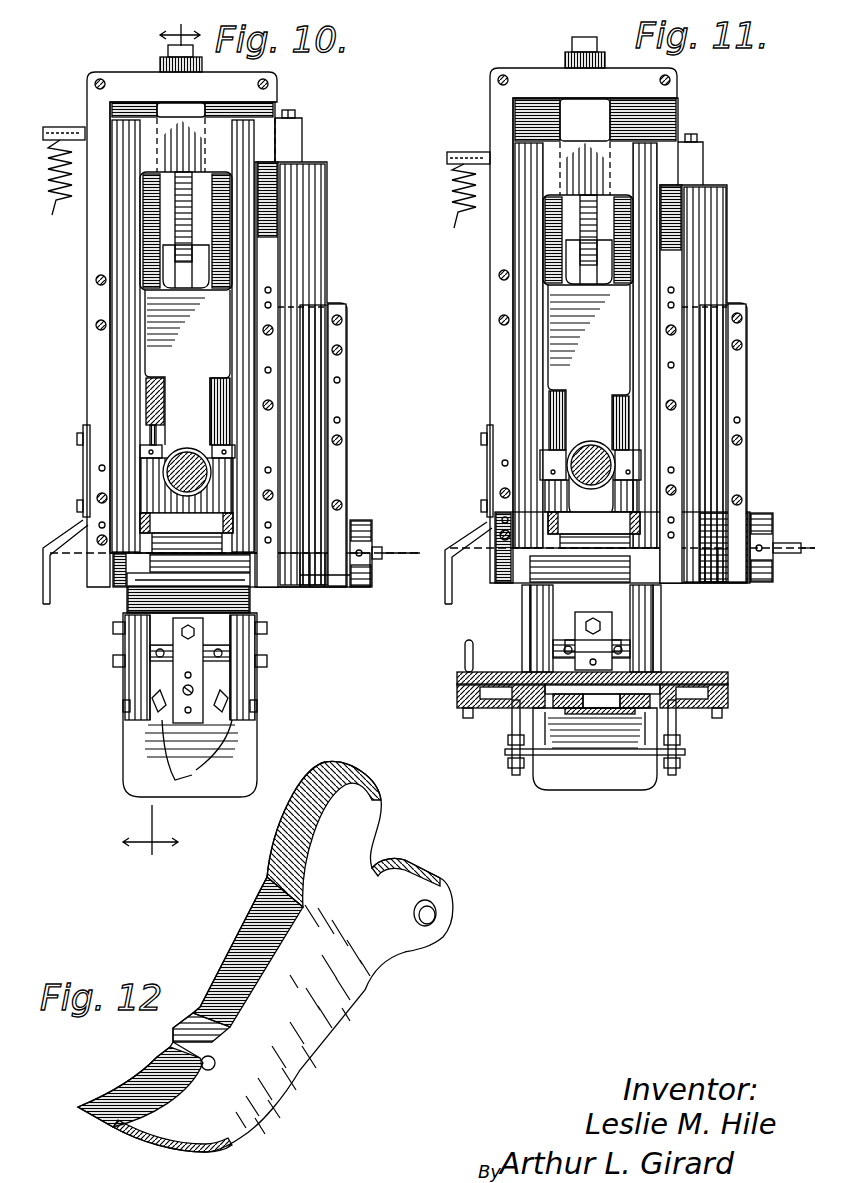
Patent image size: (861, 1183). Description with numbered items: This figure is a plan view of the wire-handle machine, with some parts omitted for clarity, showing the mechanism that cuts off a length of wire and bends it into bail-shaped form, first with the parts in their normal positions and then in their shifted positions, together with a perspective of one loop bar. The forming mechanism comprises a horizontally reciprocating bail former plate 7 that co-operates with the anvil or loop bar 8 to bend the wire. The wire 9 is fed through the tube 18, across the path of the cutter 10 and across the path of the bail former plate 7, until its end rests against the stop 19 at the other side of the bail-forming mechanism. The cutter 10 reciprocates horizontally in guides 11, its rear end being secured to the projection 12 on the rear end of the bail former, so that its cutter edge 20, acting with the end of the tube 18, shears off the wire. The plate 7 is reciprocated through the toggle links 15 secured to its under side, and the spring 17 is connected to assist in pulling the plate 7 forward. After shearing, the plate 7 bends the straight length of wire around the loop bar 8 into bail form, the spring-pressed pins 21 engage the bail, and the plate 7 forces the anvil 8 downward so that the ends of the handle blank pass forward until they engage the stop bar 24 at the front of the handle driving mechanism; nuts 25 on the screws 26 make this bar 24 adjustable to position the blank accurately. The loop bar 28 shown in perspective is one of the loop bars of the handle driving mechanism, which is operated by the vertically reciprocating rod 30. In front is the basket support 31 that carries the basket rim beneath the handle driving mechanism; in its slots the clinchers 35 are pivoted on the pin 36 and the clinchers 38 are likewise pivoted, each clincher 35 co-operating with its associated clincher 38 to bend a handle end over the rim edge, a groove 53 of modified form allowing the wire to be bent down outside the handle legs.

In FIG. 10, the bail former plate 7 is at (240, 310).
In FIG. 11, the bail former plate 7 is at (645, 275).
In FIG. 10, the loop bar 8 is at (190, 569).
In FIG. 11, the loop bar 8 is at (590, 556).
In FIG. 10, the wire 9 is at (308, 562).
In FIG. 10, the cutter 10 is at (305, 215).
In FIG. 11, the cutter 10 is at (710, 218).
In FIG. 10, the guides 11 is at (270, 433).
In FIG. 11, the guides 11 is at (740, 398).
In FIG. 10, the projection 12 is at (285, 146).
In FIG. 10, the toggle links 15 is at (195, 240).
In FIG. 11, the toggle links 15 is at (573, 262).
In FIG. 10, the spring 17 is at (60, 186).
In FIG. 11, the spring 17 is at (461, 209).
In FIG. 10, the tube 18 is at (386, 550).
In FIG. 11, the tube 18 is at (783, 544).
In FIG. 10, the stop 19 is at (46, 614).
In FIG. 11, the stop 19 is at (447, 612).
In FIG. 10, the cutter edge 20 is at (315, 552).
In FIG. 11, the cutter edge 20 is at (718, 584).
In FIG. 10, the spring-pressed pins 21 is at (218, 522).
In FIG. 11, the spring-pressed pins 21 is at (630, 565).
In FIG. 11, the stop bar 24 is at (575, 756).
In FIG. 11, the nuts 25 is at (508, 755).
In FIG. 11, the screws 26 is at (512, 731).
In FIG. 11, the loop bar 28 is at (617, 690).
In FIG. 12, the loop bar 28 is at (252, 1072).
In FIG. 10, the vertically reciprocating rod 30 is at (187, 462).
In FIG. 11, the vertically reciprocating rod 30 is at (591, 460).
In FIG. 10, the basket support 31 is at (235, 745).
In FIG. 11, the basket support 31 is at (625, 778).
In FIG. 10, the clinchers 35 is at (148, 700).
In FIG. 10, the pin 36 is at (250, 718).
In FIG. 10, the clinchers 38 is at (152, 655).
In FIG. 11, the clinchers 38 is at (622, 650).
In FIG. 10, the groove 53 is at (197, 753).